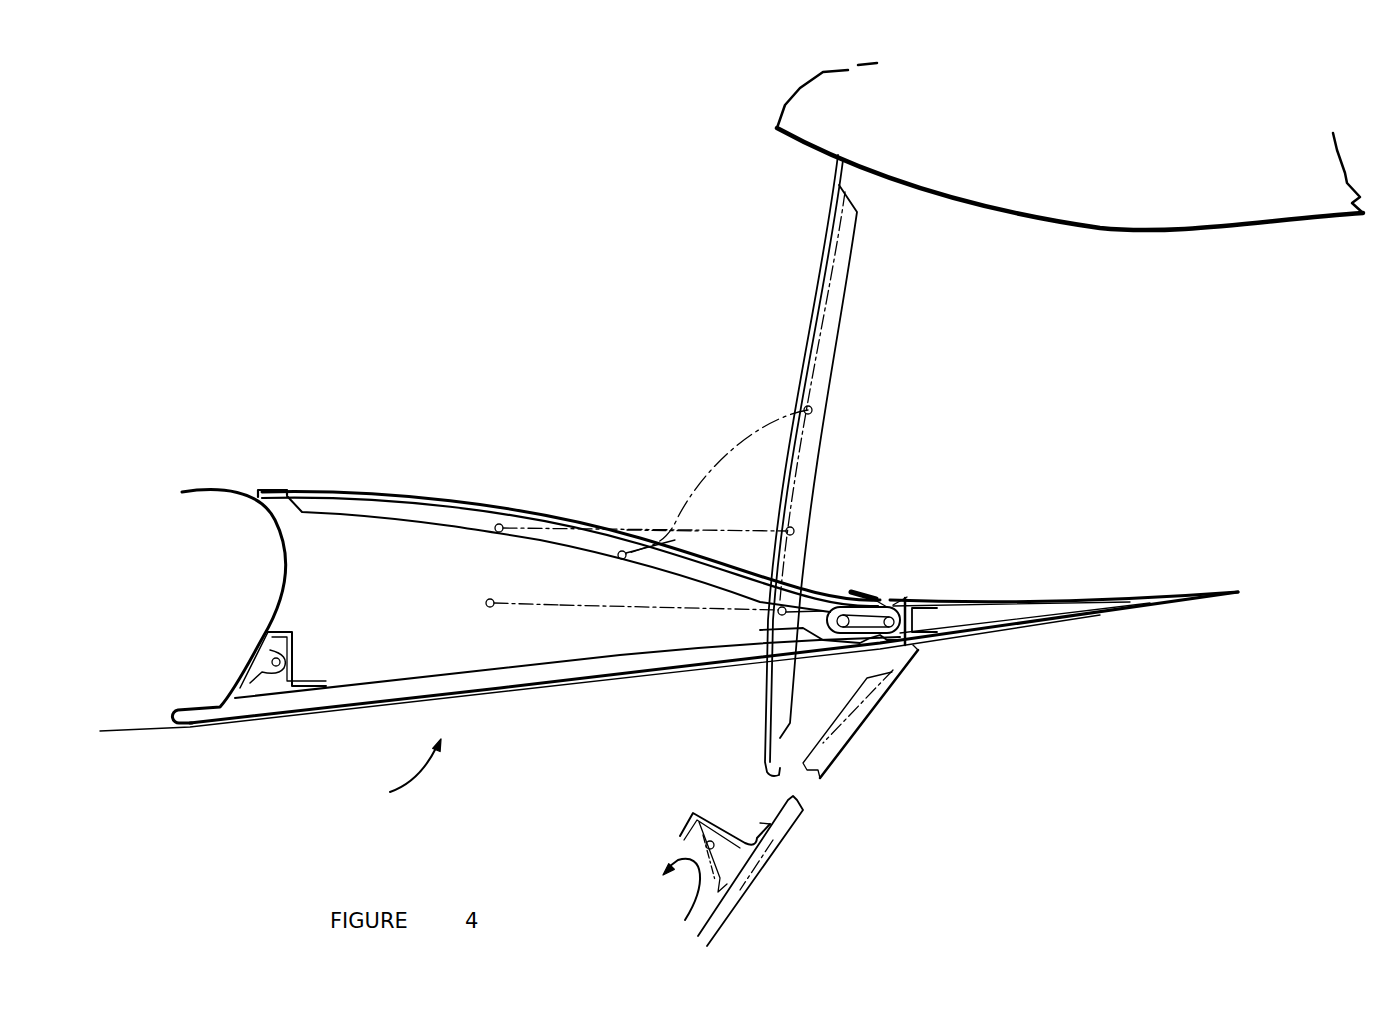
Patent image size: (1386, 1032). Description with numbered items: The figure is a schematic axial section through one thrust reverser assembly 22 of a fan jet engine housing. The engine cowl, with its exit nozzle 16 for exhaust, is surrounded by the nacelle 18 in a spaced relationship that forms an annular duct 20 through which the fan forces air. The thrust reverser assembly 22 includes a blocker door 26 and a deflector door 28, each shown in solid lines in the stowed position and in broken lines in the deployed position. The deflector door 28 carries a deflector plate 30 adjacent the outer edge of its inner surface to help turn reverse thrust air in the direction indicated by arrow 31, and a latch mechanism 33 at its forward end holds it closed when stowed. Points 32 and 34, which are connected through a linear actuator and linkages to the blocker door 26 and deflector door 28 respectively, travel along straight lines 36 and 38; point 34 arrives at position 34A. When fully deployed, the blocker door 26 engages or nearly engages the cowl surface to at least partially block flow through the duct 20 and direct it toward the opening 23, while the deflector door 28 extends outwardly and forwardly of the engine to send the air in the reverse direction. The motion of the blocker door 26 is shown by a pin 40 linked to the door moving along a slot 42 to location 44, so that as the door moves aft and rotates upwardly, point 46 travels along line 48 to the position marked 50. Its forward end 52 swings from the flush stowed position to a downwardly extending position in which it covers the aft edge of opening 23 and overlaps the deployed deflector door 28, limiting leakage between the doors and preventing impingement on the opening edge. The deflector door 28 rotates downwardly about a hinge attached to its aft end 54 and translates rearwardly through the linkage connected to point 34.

The exit nozzle 16 is at (1065, 226).
The nacelle 18 is at (1080, 614).
The annular duct 20 is at (1121, 406).
The thrust reverser assembly 22 is at (400, 772).
The opening 23 is at (851, 603).
The blocker door 26 is at (800, 343).
The deflector door 28 is at (543, 688).
The deflector plate 30 is at (296, 637).
The arrow 31 is at (684, 901).
The point 32 is at (501, 524).
The latch mechanism 33 is at (268, 665).
The point 34 is at (490, 600).
The deployed point position 34A is at (778, 614).
The straight line 36 is at (627, 529).
The straight line 38 is at (610, 606).
The pin 40 is at (868, 595).
The slot 42 is at (907, 598).
The location 44 is at (920, 649).
The point 46 is at (618, 553).
The line 48 is at (712, 470).
The deployed point position 50 is at (812, 411).
The forward end 52 is at (259, 487).
The door aft end 54 is at (847, 645).